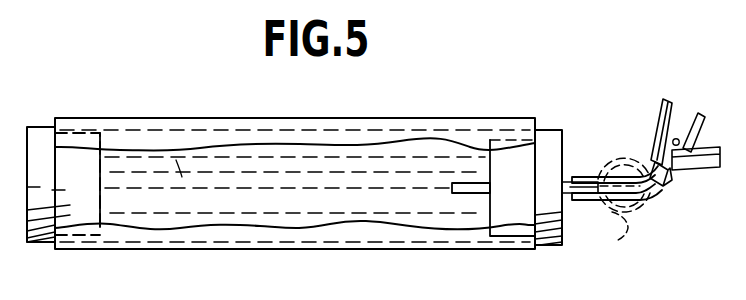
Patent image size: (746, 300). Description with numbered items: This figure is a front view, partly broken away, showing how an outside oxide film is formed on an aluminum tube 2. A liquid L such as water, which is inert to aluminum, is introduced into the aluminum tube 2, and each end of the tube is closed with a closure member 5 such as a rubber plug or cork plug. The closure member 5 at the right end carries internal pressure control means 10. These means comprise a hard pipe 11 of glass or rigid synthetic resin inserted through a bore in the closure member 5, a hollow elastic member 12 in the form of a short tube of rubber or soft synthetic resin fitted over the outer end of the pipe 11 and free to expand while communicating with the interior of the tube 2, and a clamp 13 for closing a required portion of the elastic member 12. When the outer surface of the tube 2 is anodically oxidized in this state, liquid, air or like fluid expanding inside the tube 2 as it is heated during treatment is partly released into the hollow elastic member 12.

The aluminum tube 2 is at (232, 128).
The closure member 5 is at (38, 136).
The liquid L is at (182, 177).
The internal pressure control means 10 is at (603, 160).
The hard pipe 11 is at (466, 185).
The hollow elastic member 12 is at (612, 212).
The clamp 13 is at (663, 118).